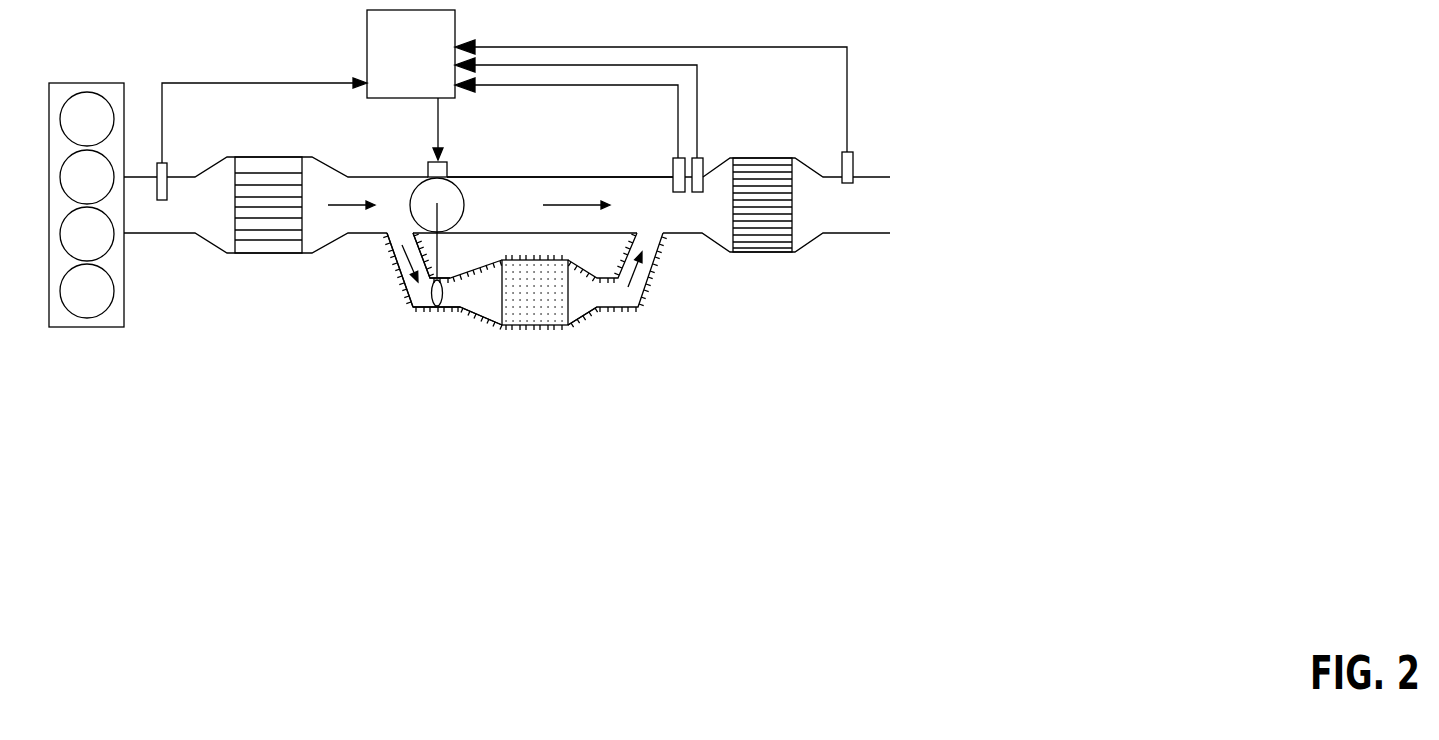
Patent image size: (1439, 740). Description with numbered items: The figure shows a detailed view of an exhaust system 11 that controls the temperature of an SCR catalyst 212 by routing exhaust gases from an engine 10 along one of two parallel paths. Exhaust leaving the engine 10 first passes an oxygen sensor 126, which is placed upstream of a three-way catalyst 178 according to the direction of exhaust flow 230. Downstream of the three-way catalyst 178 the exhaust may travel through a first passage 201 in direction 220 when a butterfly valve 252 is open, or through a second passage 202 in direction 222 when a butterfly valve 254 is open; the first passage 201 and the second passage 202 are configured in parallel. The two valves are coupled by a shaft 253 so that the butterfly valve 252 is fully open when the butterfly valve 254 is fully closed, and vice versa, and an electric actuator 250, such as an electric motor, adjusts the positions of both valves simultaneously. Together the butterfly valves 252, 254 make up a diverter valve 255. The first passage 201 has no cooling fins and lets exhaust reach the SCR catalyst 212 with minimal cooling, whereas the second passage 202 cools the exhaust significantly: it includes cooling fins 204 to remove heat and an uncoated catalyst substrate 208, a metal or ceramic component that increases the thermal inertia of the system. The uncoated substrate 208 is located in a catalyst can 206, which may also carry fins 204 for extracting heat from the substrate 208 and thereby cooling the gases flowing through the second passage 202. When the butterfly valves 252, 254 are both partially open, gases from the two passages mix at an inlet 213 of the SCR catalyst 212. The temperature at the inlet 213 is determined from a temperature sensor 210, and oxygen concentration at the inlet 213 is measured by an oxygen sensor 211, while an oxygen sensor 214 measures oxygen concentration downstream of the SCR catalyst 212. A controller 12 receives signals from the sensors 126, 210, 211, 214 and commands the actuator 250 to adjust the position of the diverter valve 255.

The engine 10 is at (90, 83).
The exhaust system 11 is at (222, 288).
The controller 12 is at (504, 86).
The oxygen sensor 126 is at (162, 163).
The three-way catalyst 178 is at (248, 157).
The first passage 201 is at (536, 163).
The second passage 202 is at (406, 291).
The cooling fins 204 is at (410, 307).
The catalyst can 206 is at (495, 325).
The uncoated catalyst substrate 208 is at (540, 267).
The temperature sensor 210 is at (673, 160).
The oxygen sensor 211 is at (703, 160).
The SCR catalyst 212 is at (770, 165).
The inlet 213 is at (707, 208).
The oxygen sensor 214 is at (852, 155).
The direction 220 is at (556, 190).
The direction 222 is at (400, 263).
The direction of exhaust flow 230 is at (336, 190).
The electric actuator 250 is at (445, 160).
The butterfly valve 252 is at (456, 207).
The shaft 253 is at (438, 262).
The butterfly valve 254 is at (437, 307).
The diverter valve 255 is at (415, 155).